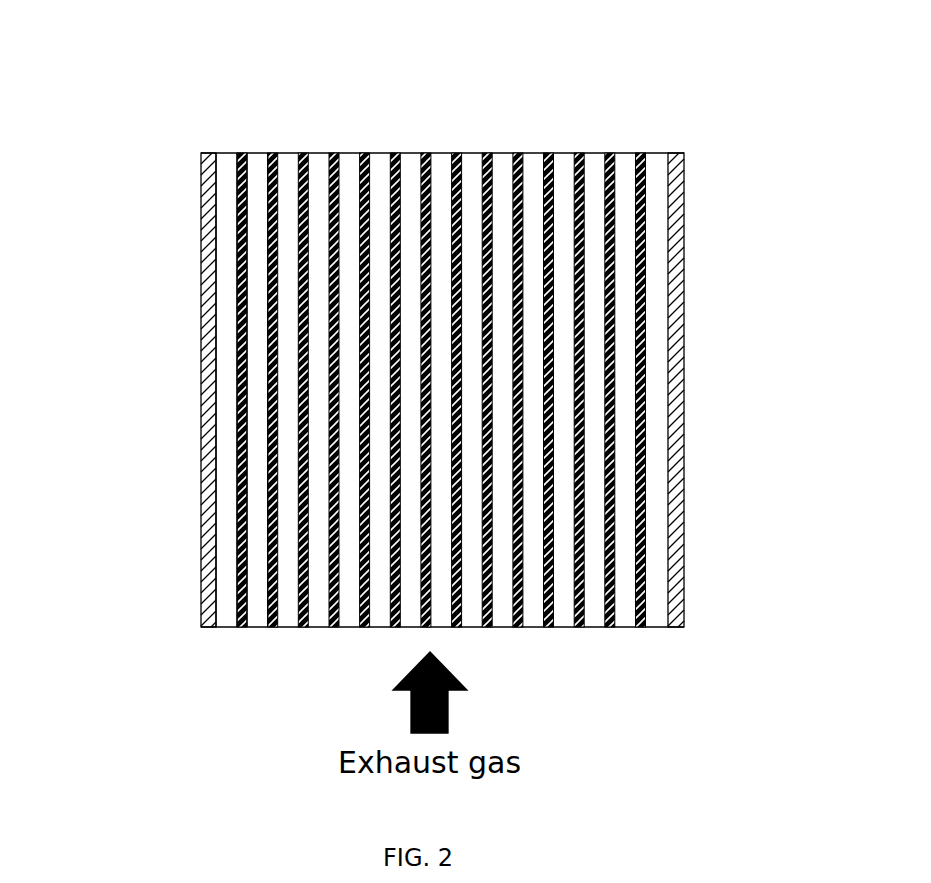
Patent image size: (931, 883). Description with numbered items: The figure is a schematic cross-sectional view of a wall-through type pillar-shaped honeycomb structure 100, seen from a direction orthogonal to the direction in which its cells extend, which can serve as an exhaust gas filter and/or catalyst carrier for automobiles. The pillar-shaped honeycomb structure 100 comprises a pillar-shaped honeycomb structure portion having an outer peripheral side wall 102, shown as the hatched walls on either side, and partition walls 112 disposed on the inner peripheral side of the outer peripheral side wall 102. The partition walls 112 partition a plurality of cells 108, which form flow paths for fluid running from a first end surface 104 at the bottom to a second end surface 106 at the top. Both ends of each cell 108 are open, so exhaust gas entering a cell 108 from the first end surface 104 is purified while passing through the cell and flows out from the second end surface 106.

The pillar-shaped honeycomb structure 100 is at (427, 114).
The outer peripheral side wall 102 is at (201, 203).
The first end surface 104 is at (210, 627).
The second end surface 106 is at (216, 153).
The cell 108 is at (529, 165).
The partition wall 112 is at (237, 329).